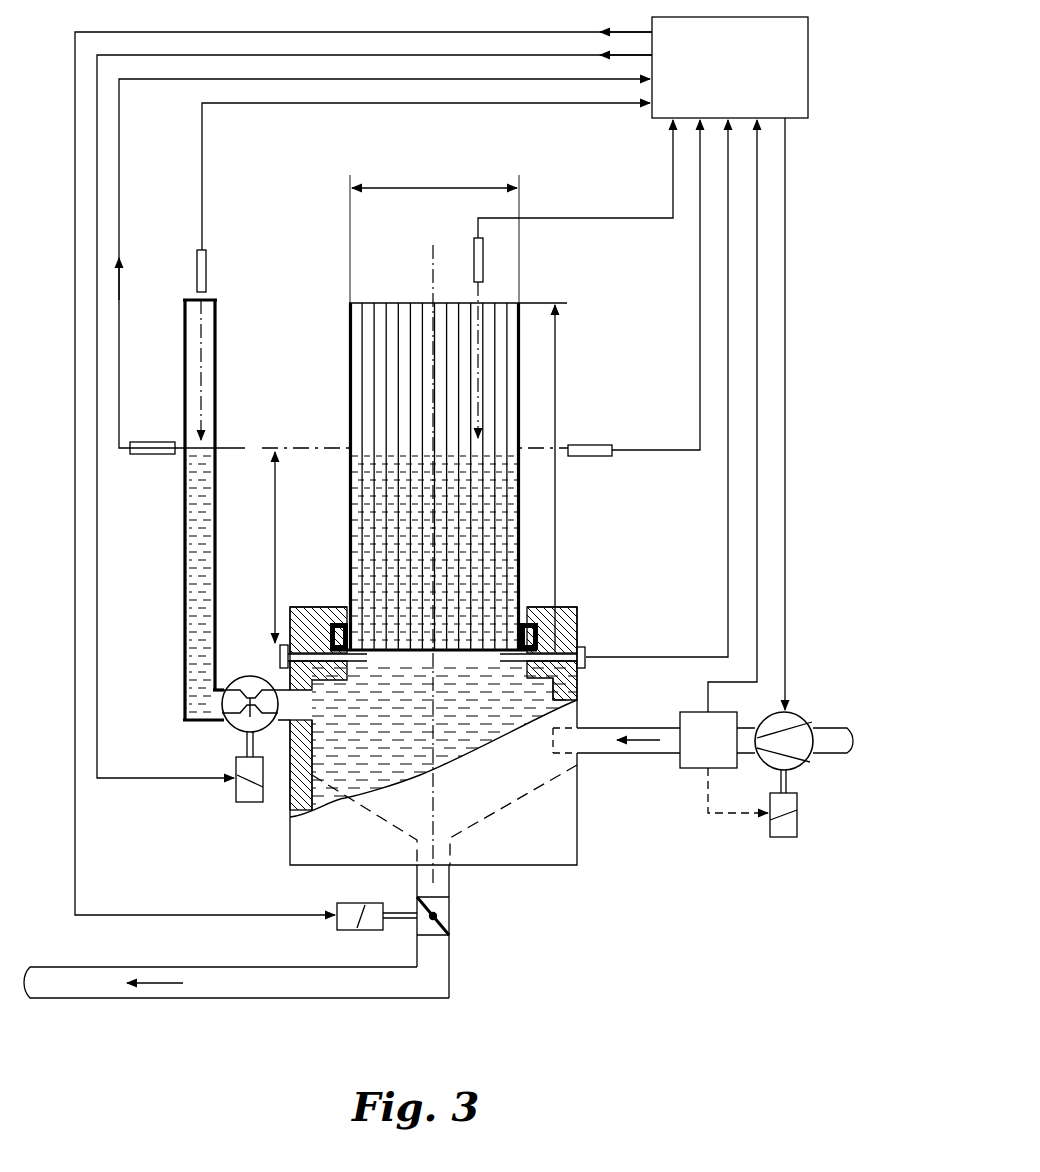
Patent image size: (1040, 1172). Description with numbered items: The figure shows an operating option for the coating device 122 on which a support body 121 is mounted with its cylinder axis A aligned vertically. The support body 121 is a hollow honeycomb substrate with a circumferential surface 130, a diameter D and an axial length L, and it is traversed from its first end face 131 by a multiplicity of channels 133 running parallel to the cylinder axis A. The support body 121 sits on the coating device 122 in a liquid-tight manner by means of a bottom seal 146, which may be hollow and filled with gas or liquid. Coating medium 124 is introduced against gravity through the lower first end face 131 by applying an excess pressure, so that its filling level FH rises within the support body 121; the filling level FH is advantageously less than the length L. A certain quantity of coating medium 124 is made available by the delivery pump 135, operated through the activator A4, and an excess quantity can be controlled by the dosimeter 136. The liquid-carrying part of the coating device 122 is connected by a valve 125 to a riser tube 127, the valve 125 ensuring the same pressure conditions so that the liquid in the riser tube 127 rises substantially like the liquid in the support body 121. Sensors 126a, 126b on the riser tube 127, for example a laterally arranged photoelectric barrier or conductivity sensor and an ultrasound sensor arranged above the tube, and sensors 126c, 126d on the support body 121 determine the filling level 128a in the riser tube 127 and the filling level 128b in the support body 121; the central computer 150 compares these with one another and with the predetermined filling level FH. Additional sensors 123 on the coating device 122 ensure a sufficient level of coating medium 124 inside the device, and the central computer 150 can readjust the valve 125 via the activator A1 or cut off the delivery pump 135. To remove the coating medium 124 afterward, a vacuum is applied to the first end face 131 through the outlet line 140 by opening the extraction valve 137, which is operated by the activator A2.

The central computer 150 is at (750, 82).
The support body 121 is at (343, 360).
The coating device 122 is at (580, 870).
The sensors 123 is at (282, 655).
The coating medium 124 is at (470, 733).
The valve 125 is at (233, 715).
The sensor 126a is at (152, 455).
The sensor 126b is at (207, 266).
The sensor 126c is at (483, 258).
The sensor 126d is at (588, 444).
The riser tube 127 is at (187, 371).
The filling level in the riser tube 128a is at (256, 420).
The filling level in the support body 128b is at (328, 446).
The circumferential surface 130 is at (523, 545).
The first end face 131 is at (400, 656).
The channels 133 is at (410, 312).
The delivery pump 135 is at (804, 718).
The dosimeter 136 is at (692, 758).
The extraction valve 137 is at (440, 918).
The outlet line 140 is at (236, 984).
The bottom seal 146 is at (556, 650).
The activator for valve A1 is at (240, 785).
The activator for extraction valve A2 is at (340, 920).
The activator for delivery pump A4 is at (792, 823).
The cylinder axis A is at (457, 786).
The diameter of support body D is at (434, 230).
The filling level FH is at (300, 547).
The length of support body L is at (556, 498).